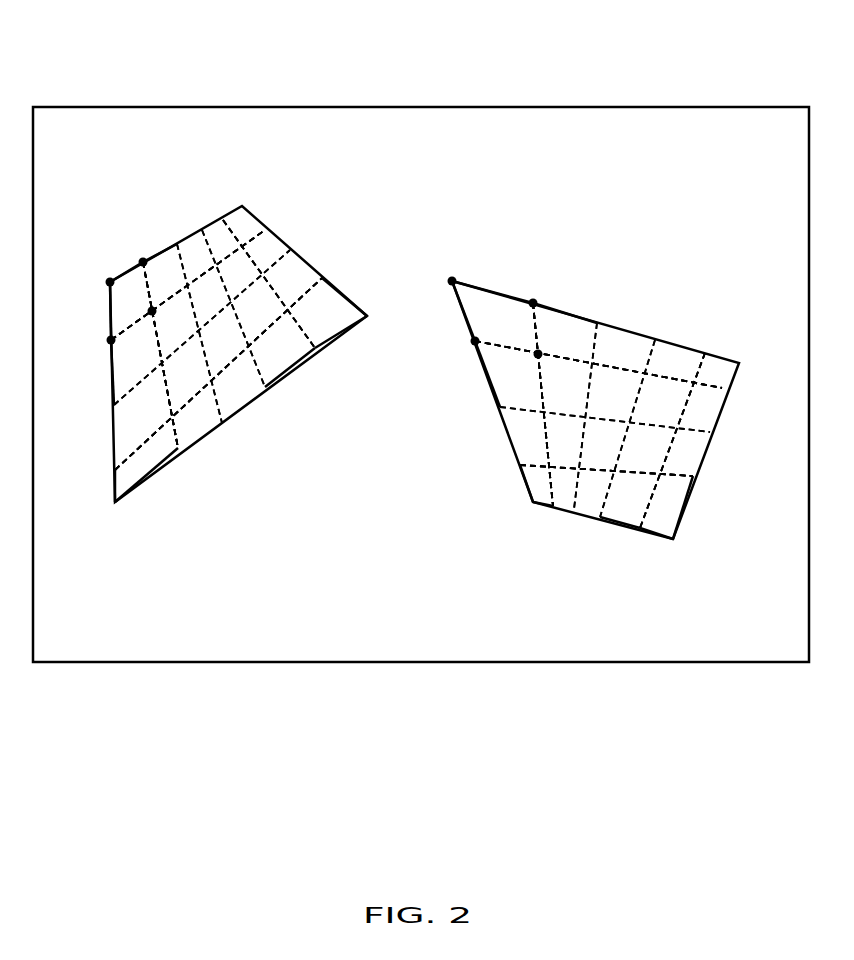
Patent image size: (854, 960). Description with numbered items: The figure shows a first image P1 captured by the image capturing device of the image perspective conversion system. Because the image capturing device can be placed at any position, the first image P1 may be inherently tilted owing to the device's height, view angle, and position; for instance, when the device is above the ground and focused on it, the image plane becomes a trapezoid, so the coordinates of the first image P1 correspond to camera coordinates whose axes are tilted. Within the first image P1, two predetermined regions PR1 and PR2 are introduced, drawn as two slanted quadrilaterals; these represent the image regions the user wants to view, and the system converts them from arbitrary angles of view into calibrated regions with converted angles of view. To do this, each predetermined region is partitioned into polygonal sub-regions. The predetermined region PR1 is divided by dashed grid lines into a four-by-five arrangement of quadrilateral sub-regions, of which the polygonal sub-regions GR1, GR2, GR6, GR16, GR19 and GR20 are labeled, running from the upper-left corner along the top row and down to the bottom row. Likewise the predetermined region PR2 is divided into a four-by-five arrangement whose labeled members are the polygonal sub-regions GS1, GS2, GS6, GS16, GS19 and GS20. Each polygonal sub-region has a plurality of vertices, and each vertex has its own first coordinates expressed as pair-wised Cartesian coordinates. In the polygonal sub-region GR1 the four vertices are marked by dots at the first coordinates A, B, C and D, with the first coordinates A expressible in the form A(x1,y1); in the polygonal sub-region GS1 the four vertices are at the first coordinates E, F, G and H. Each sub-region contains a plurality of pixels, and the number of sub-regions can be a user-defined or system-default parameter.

The first image P1 is at (708, 107).
The predetermined region PR1 is at (248, 206).
The predetermined region PR2 is at (742, 363).
The polygonal sub-region GR1 is at (126, 312).
The polygonal sub-region GR2 is at (162, 262).
The polygonal sub-region GR6 is at (112, 368).
The polygonal sub-region GR16 is at (150, 458).
The polygonal sub-region GR19 is at (288, 350).
The polygonal sub-region GR20 is at (340, 315).
The polygonal sub-region GS1 is at (501, 310).
The polygonal sub-region GS2 is at (568, 327).
The polygonal sub-region GS6 is at (502, 367).
The polygonal sub-region GS16 is at (540, 490).
The polygonal sub-region GS19 is at (628, 513).
The polygonal sub-region GS20 is at (668, 500).
The first coordinates A is at (104, 270).
The first coordinates B is at (141, 250).
The first coordinates C is at (104, 341).
The first coordinates D is at (161, 320).
The first coordinates E is at (444, 271).
The first coordinates F is at (533, 291).
The first coordinates G is at (465, 345).
The first coordinates H is at (530, 343).